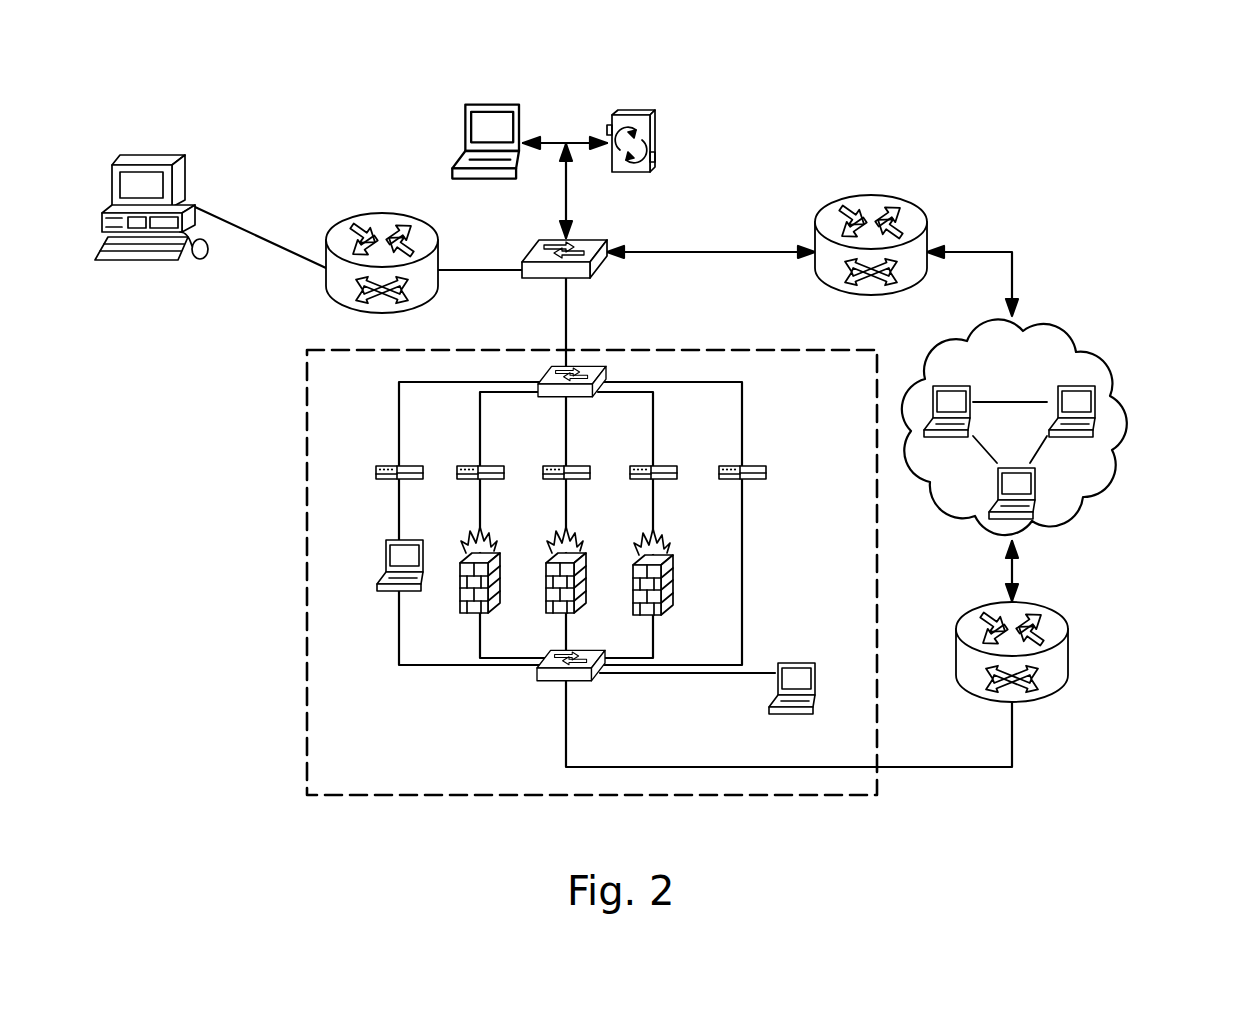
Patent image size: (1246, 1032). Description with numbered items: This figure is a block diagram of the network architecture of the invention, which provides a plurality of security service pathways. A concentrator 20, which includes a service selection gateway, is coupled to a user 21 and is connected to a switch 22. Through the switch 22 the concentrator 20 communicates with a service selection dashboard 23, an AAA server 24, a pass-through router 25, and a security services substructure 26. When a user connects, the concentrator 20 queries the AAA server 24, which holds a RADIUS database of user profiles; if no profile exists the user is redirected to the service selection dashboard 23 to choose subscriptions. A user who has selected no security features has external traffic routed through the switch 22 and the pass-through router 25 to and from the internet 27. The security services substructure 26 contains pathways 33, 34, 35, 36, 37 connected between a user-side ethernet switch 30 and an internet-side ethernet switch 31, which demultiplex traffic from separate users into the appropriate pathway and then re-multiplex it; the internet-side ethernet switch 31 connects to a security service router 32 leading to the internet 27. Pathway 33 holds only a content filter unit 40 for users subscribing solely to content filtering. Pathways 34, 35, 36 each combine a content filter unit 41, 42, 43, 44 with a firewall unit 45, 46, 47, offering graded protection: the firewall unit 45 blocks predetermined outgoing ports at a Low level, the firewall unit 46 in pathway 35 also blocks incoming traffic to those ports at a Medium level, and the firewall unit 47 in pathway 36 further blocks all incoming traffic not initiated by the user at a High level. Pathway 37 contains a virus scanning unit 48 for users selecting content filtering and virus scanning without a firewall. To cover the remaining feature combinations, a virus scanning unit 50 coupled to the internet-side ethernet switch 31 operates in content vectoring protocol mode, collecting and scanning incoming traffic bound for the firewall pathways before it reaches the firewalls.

The concentrator 20 is at (382, 212).
The user 21 is at (150, 153).
The switch 22 is at (603, 240).
The service selection dashboard 23 is at (490, 100).
The AAA server 24 is at (632, 110).
The pass-through router 25 is at (868, 195).
The security services substructure 26 is at (307, 553).
The internet 27 is at (1137, 413).
The user-side ethernet switch 30 is at (590, 367).
The internet-side ethernet switch 31 is at (537, 680).
The security service router 32 is at (1070, 650).
The pathway 33 is at (744, 396).
The pathway 34 is at (655, 408).
The pathway 35 is at (570, 421).
The pathway 36 is at (482, 415).
The pathway 37 is at (398, 408).
The content filter unit 40 is at (767, 474).
The content filter unit 41 is at (676, 474).
The content filter unit 42 is at (585, 466).
The content filter unit 43 is at (488, 467).
The content filter unit 44 is at (378, 474).
The firewall unit 45 is at (673, 598).
The firewall unit 46 is at (590, 572).
The firewall unit 47 is at (503, 565).
The virus scanning unit 48 is at (378, 585).
The virus scanning unit 50 is at (795, 662).